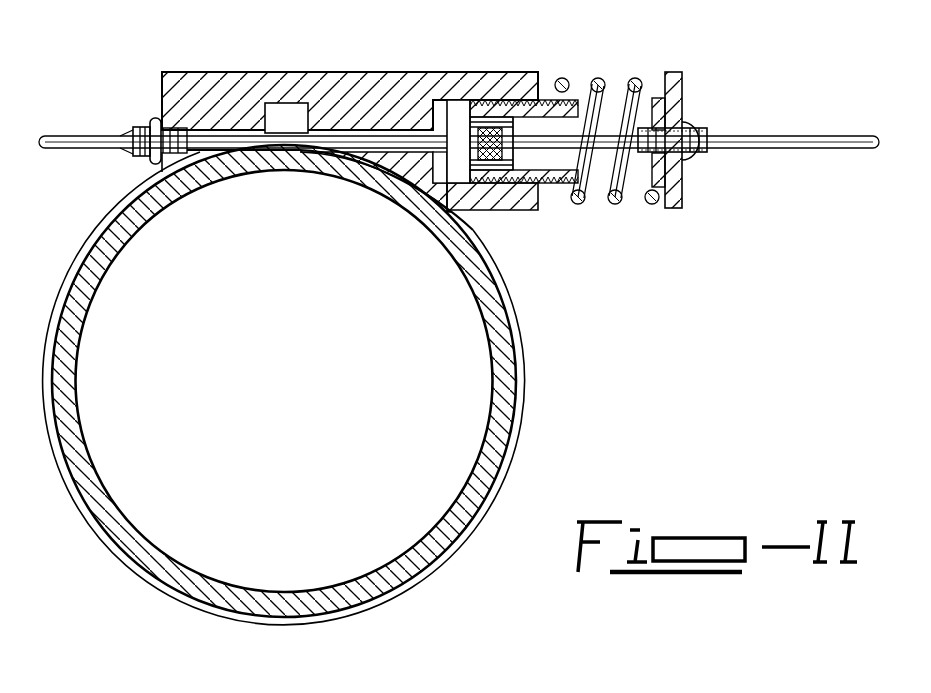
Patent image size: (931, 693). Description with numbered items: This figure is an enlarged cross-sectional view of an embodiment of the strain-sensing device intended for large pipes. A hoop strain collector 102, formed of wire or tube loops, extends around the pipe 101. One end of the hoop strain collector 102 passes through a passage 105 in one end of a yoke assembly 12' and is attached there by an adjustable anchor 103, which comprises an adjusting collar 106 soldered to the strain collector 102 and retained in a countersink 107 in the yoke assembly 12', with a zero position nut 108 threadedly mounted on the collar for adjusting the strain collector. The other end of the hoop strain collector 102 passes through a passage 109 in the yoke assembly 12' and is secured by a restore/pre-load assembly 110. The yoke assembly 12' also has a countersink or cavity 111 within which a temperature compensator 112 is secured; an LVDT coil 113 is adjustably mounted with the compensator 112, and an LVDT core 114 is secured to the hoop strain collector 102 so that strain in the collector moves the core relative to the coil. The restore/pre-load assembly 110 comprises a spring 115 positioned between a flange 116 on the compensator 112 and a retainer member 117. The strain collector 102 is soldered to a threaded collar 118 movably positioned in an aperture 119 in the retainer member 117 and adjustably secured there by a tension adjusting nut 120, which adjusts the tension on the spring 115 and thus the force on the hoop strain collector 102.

The yoke assembly 12' is at (331, 112).
The pipe 101 is at (505, 386).
The hoop strain collector 102 is at (108, 214).
The adjustable anchor 103 is at (101, 106).
The passage 105 is at (212, 156).
The adjusting collar 106 is at (141, 128).
The countersink 107 is at (350, 142).
The zero position nut 108 is at (153, 118).
The passage 109 is at (385, 134).
The restore/pre-load assembly 110 is at (716, 117).
The countersink or cavity 111 is at (432, 162).
The temperature compensator 112 is at (548, 98).
The LVDT coil 113 is at (482, 117).
The LVDT core 114 is at (497, 128).
The spring 115 is at (657, 192).
The flange 116 is at (520, 200).
The retainer member 117 is at (676, 72).
The threaded collar 118 is at (706, 130).
The aperture 119 is at (681, 124).
The tension adjusting nut 120 is at (695, 160).